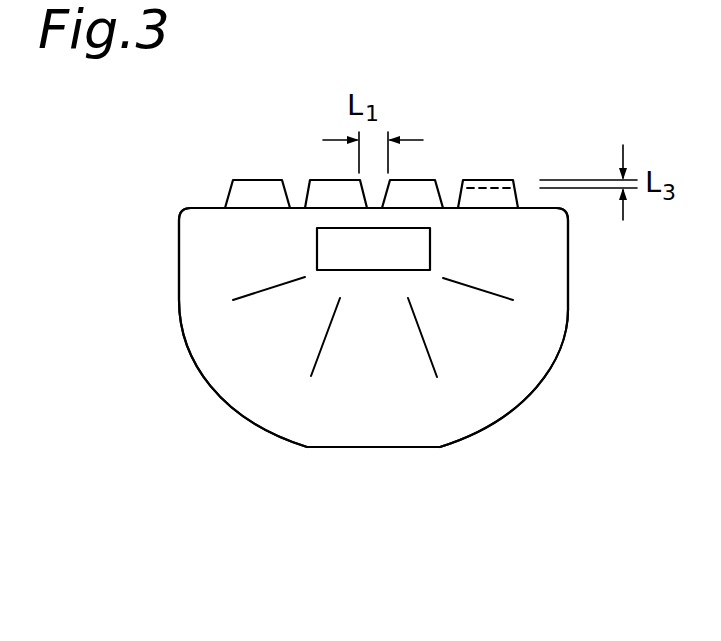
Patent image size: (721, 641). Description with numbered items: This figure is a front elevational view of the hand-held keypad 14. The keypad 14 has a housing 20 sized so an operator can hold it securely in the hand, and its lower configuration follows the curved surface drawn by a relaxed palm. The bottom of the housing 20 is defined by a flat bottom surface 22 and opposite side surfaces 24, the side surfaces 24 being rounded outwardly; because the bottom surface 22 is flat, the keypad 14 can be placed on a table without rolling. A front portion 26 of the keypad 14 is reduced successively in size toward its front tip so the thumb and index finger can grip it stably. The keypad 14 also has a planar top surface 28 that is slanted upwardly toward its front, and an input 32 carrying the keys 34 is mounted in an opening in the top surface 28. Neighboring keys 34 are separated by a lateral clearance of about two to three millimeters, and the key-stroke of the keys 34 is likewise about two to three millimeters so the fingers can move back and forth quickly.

The keypad 14 is at (443, 164).
The housing 20 is at (208, 269).
The bottom surface 22 is at (372, 447).
The side surfaces 24 is at (207, 377).
The front portion 26 is at (443, 250).
The top surface 28 is at (188, 207).
The input 32 is at (507, 177).
The keys 34 is at (247, 180).